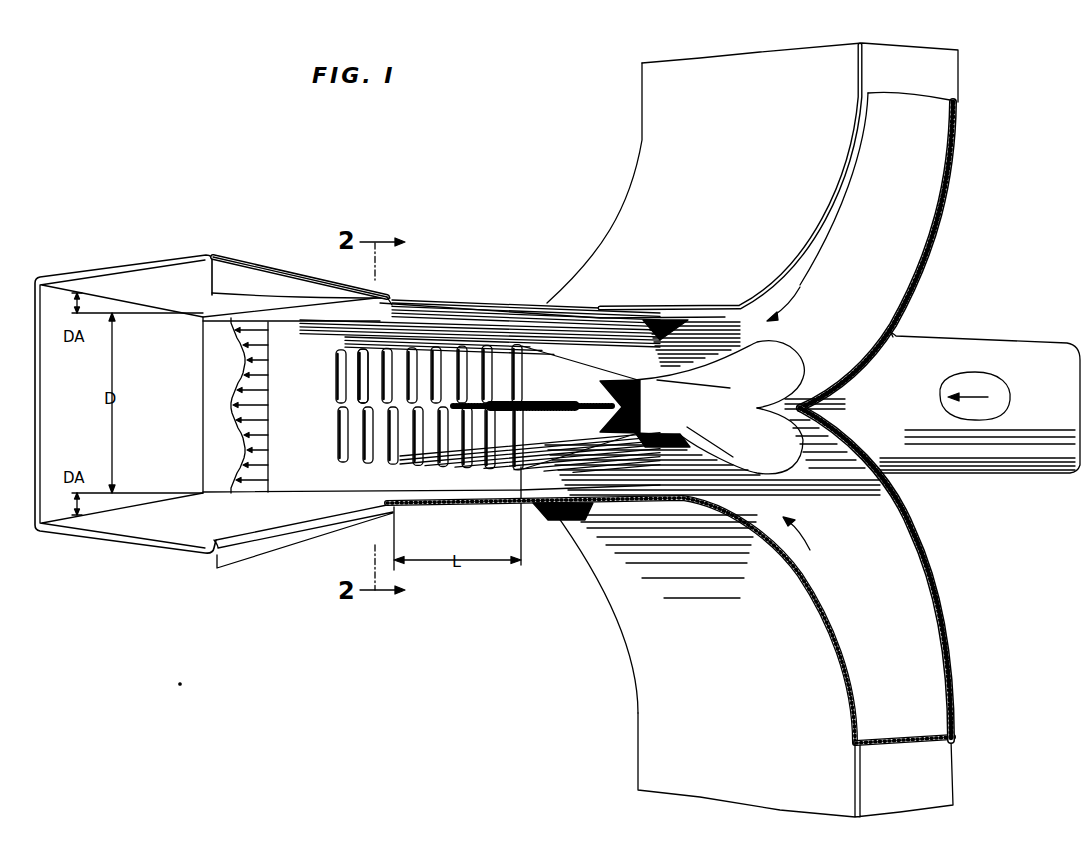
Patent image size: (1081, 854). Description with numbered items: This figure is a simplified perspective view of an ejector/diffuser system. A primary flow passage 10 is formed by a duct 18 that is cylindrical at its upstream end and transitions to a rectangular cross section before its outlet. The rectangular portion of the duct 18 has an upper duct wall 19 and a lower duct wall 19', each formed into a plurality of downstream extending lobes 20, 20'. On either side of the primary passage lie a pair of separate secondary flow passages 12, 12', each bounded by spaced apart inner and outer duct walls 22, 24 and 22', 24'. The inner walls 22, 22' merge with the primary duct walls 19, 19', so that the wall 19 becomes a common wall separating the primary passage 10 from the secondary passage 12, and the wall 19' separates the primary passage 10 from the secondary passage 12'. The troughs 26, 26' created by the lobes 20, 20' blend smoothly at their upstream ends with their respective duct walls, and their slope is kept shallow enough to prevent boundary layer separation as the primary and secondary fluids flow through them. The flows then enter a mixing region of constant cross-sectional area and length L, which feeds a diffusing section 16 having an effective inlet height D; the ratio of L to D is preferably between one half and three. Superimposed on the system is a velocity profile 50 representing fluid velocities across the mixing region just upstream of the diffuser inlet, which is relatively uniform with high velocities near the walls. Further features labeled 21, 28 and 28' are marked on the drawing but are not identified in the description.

The primary flow passage 10 is at (983, 414).
The secondary flow passage 12 is at (779, 204).
The secondary flow passage 12' is at (670, 631).
The diffusing section 16 is at (325, 536).
The duct 18 is at (1059, 407).
The upper duct wall 19 is at (719, 364).
The lower duct wall 19' is at (719, 441).
The lobes 20 is at (479, 368).
The lobes 20' is at (431, 449).
The central divider 21 is at (330, 407).
The inner duct wall 22 is at (895, 255).
The inner duct wall 22' is at (900, 574).
The outer duct wall 24 is at (604, 183).
The outer duct wall 24' is at (599, 621).
The troughs 26 is at (328, 376).
The troughs 26' is at (334, 435).
The upper lobe edge 28 is at (319, 376).
The lower lobe edge 28' is at (318, 443).
The velocity profile 50 is at (242, 457).